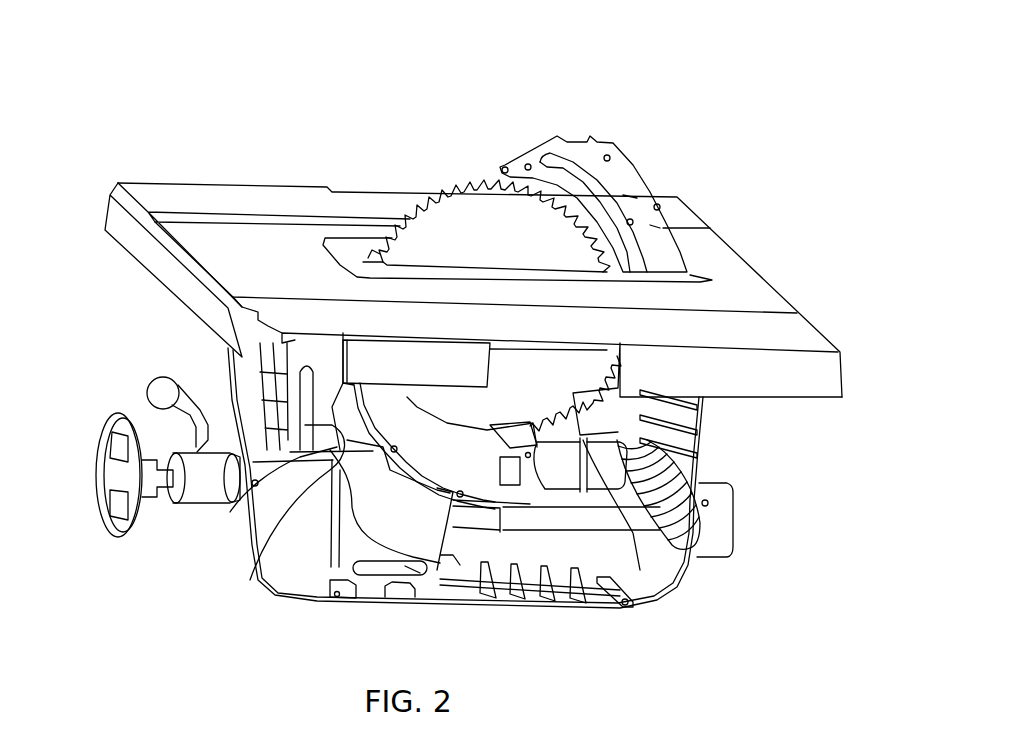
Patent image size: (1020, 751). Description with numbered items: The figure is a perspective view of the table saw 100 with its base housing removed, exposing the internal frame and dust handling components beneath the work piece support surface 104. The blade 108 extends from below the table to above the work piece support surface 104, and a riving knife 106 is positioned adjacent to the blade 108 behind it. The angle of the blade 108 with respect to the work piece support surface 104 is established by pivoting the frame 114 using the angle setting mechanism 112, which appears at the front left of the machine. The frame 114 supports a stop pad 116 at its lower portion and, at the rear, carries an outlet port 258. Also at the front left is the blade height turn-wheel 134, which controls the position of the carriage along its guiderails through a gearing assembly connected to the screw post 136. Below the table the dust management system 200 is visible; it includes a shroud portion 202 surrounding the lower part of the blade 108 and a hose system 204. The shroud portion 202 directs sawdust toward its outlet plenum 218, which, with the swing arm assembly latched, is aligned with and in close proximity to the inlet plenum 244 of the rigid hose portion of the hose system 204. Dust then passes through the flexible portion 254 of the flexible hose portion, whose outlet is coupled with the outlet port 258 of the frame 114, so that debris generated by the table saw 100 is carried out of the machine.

The table saw 100 is at (694, 111).
The work piece support surface 104 is at (730, 253).
The riving knife 106 is at (618, 162).
The blade 108 is at (465, 181).
The angle setting mechanism 112 is at (170, 383).
The frame 114 is at (710, 422).
The stop pad 116 is at (465, 577).
The blade height turn-wheel 134 is at (125, 422).
The screw post 136 is at (300, 495).
The dust management system 200 is at (557, 523).
The shroud portion 202 is at (437, 488).
The hose system 204 is at (628, 537).
The outlet plenum 218 is at (535, 485).
The inlet plenum 244 is at (560, 485).
The flexible portion 254 is at (650, 557).
The outlet port 258 is at (737, 503).